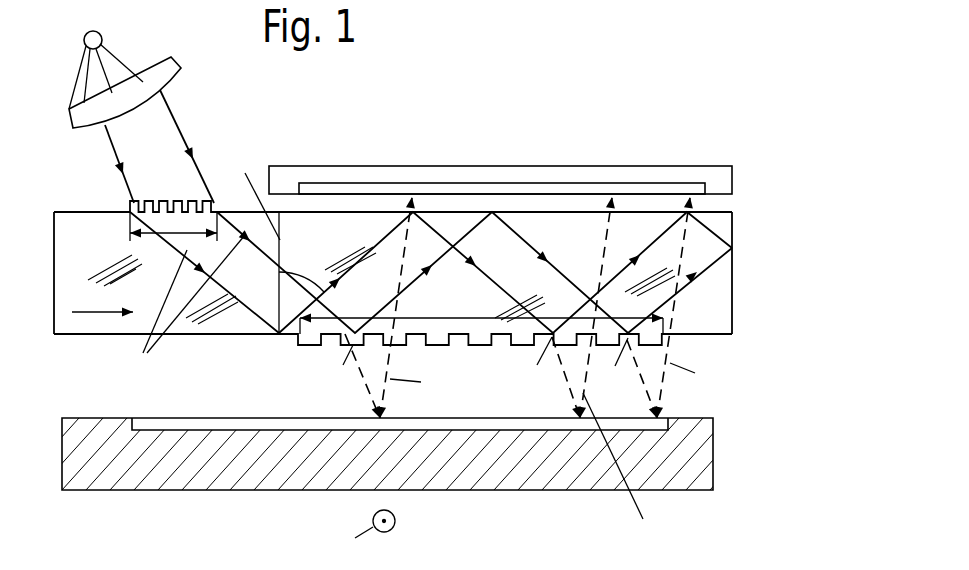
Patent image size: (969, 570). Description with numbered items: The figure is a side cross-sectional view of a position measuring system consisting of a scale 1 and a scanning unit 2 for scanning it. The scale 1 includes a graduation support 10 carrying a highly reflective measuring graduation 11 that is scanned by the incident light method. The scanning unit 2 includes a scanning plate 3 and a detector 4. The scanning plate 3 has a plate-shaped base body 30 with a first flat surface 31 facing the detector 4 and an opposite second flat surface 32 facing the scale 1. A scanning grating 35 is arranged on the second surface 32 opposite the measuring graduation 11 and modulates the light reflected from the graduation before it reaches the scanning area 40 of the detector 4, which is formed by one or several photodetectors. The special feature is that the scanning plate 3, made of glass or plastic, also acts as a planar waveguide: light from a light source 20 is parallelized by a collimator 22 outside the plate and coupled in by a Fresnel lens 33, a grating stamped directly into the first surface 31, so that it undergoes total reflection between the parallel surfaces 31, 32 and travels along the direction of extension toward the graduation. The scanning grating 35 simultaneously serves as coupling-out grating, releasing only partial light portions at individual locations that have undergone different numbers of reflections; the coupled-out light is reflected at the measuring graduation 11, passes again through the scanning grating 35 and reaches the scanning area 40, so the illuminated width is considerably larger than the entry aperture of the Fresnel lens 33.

The scale 1 is at (718, 455).
The scanning unit 2 is at (742, 210).
The scanning plate 3 is at (733, 290).
The detector 4 is at (423, 166).
The graduation support 10 is at (573, 467).
The measuring graduation 11 is at (477, 425).
The light source 20 is at (84, 38).
The collimator 22 is at (95, 112).
The plate-shaped base body 30 is at (65, 267).
The first flat surface 31 is at (86, 212).
The second flat surface 32 is at (90, 336).
The Fresnel lens 33 is at (160, 200).
The scanning grating 35 is at (480, 337).
The scanning area 40 is at (472, 183).